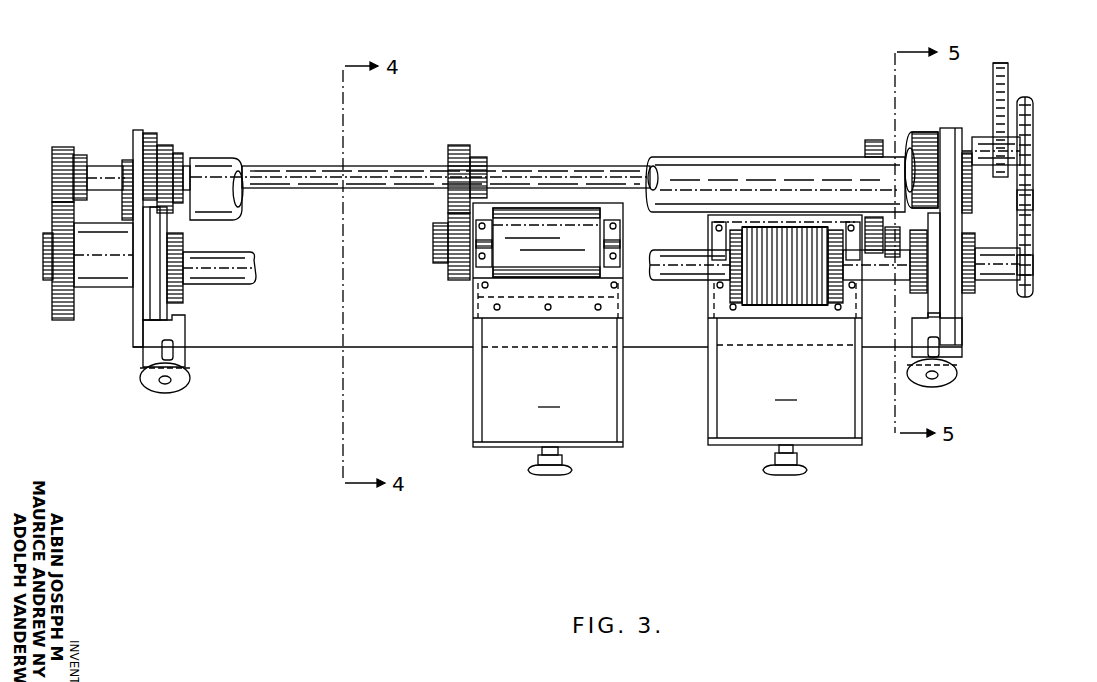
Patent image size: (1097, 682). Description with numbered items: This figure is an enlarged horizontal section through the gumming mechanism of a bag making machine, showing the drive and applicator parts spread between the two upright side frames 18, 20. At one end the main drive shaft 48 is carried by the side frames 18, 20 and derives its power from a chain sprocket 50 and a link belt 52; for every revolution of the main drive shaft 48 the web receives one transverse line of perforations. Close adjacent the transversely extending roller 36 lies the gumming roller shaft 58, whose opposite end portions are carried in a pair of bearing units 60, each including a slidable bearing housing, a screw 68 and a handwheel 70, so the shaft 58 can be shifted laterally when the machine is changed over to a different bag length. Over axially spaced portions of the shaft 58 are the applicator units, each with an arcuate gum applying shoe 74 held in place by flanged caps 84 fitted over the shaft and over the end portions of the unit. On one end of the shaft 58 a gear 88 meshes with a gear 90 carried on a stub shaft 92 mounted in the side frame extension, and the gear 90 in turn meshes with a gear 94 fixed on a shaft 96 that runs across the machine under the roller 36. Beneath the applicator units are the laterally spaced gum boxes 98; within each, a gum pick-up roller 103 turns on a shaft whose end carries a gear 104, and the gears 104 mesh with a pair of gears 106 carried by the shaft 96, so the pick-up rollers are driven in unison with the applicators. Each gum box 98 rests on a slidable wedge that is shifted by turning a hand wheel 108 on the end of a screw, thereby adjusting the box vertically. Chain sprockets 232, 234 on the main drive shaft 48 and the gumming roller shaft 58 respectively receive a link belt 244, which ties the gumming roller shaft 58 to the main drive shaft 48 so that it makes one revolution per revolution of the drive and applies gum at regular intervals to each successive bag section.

The side frame 18 is at (135, 140).
The side frame 20 is at (960, 135).
The roller 36 is at (765, 160).
The main drive shaft 48 is at (918, 132).
The chain sprocket 50 is at (990, 170).
The link belt 52 is at (1009, 76).
The gumming roller shaft 58 is at (233, 280).
The bearing unit 60 is at (178, 333).
The screw 68 is at (160, 352).
The handwheel 70 is at (167, 390).
The shoe 74 is at (752, 308).
The flanged cap 84 is at (840, 300).
The gear 88 is at (62, 312).
The gear 90 is at (43, 238).
The stub shaft 92 is at (84, 230).
The gear 94 is at (60, 150).
The shaft 96 is at (288, 170).
The gum box 98 is at (667, 325).
The gum pick-up roller 103 is at (543, 215).
The gear 104 is at (446, 270).
The gear 106 is at (458, 148).
The hand wheel 108 is at (565, 472).
The chain sprocket 232 is at (1035, 145).
The chain sprocket 234 is at (1036, 268).
The link belt 244 is at (1035, 206).